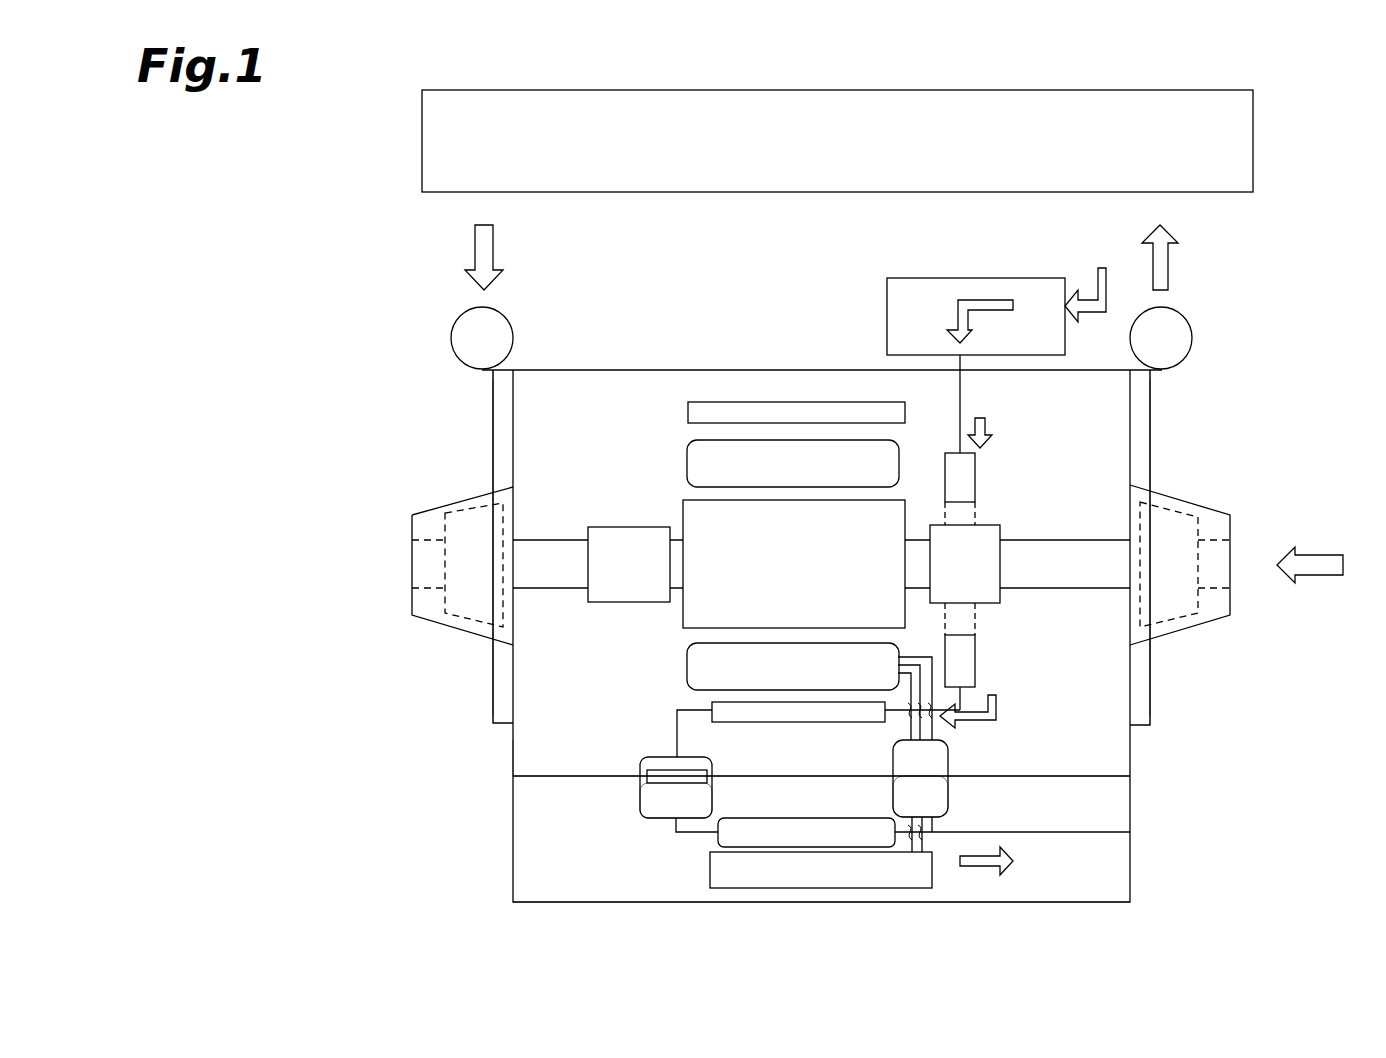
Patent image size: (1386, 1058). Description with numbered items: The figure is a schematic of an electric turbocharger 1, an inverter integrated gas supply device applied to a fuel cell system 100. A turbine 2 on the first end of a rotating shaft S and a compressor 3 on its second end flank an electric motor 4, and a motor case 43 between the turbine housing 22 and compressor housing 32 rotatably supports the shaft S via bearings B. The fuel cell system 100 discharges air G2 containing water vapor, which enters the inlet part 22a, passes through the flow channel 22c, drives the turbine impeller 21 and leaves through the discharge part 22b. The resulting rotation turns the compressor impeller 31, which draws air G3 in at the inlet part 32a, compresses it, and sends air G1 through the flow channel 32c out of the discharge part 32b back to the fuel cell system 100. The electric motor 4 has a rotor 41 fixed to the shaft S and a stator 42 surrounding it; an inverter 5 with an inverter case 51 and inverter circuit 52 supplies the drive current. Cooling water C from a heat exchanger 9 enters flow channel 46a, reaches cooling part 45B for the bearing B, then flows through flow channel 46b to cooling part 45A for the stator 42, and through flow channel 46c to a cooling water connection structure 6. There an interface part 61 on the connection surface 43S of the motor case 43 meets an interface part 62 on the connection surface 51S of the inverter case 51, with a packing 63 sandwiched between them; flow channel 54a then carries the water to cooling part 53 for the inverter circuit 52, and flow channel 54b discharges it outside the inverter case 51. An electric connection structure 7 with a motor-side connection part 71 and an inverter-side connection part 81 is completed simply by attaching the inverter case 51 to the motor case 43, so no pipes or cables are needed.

The fuel cell system 100 is at (418, 140).
The electric turbocharger 1 is at (368, 234).
The turbine 2 is at (400, 372).
The compressor 3 is at (1243, 368).
The electric motor 4 is at (697, 277).
The inverter 5 is at (1158, 810).
The cooling water connection structure 6 is at (585, 723).
The electric connection structure 7 is at (972, 782).
The heat exchanger 9 is at (906, 276).
The turbine impeller 21 is at (470, 500).
The turbine housing 22 is at (420, 512).
The inlet part 22a is at (452, 335).
The discharge part 22b is at (440, 595).
The flow channel 22c is at (490, 422).
The compressor impeller 31 is at (1180, 512).
The compressor housing 32 is at (1165, 497).
The inlet part 32a is at (1205, 588).
The discharge part 32b is at (1195, 338).
The flow channel 32c is at (1155, 420).
The rotor 41 is at (680, 520).
The stator 42 is at (686, 465).
The motor case 43 is at (838, 368).
The connection surface 43S is at (543, 779).
The cooling part 45A is at (767, 400).
The cooling part 45B is at (945, 458).
The flow channel 46a is at (962, 382).
The flow channel 46b is at (962, 708).
The flow channel 46c is at (675, 722).
The inverter case 51 is at (865, 904).
The connection surface 51S is at (527, 771).
The inverter circuit 52 is at (797, 890).
The cooling part 53 is at (822, 818).
The flow channel 54a is at (695, 834).
The flow channel 54b is at (1100, 834).
The interface part 61 is at (640, 765).
The interface part 62 is at (640, 795).
The packing 63 is at (700, 783).
The motor-side connection part 71 is at (950, 766).
The inverter-side connection part 81 is at (950, 792).
The rotating shaft S is at (562, 538).
The bearings B is at (628, 526).
The cooling water C is at (988, 300).
The air G1 is at (1170, 268).
The air G2 is at (496, 248).
The air G3 is at (1320, 553).